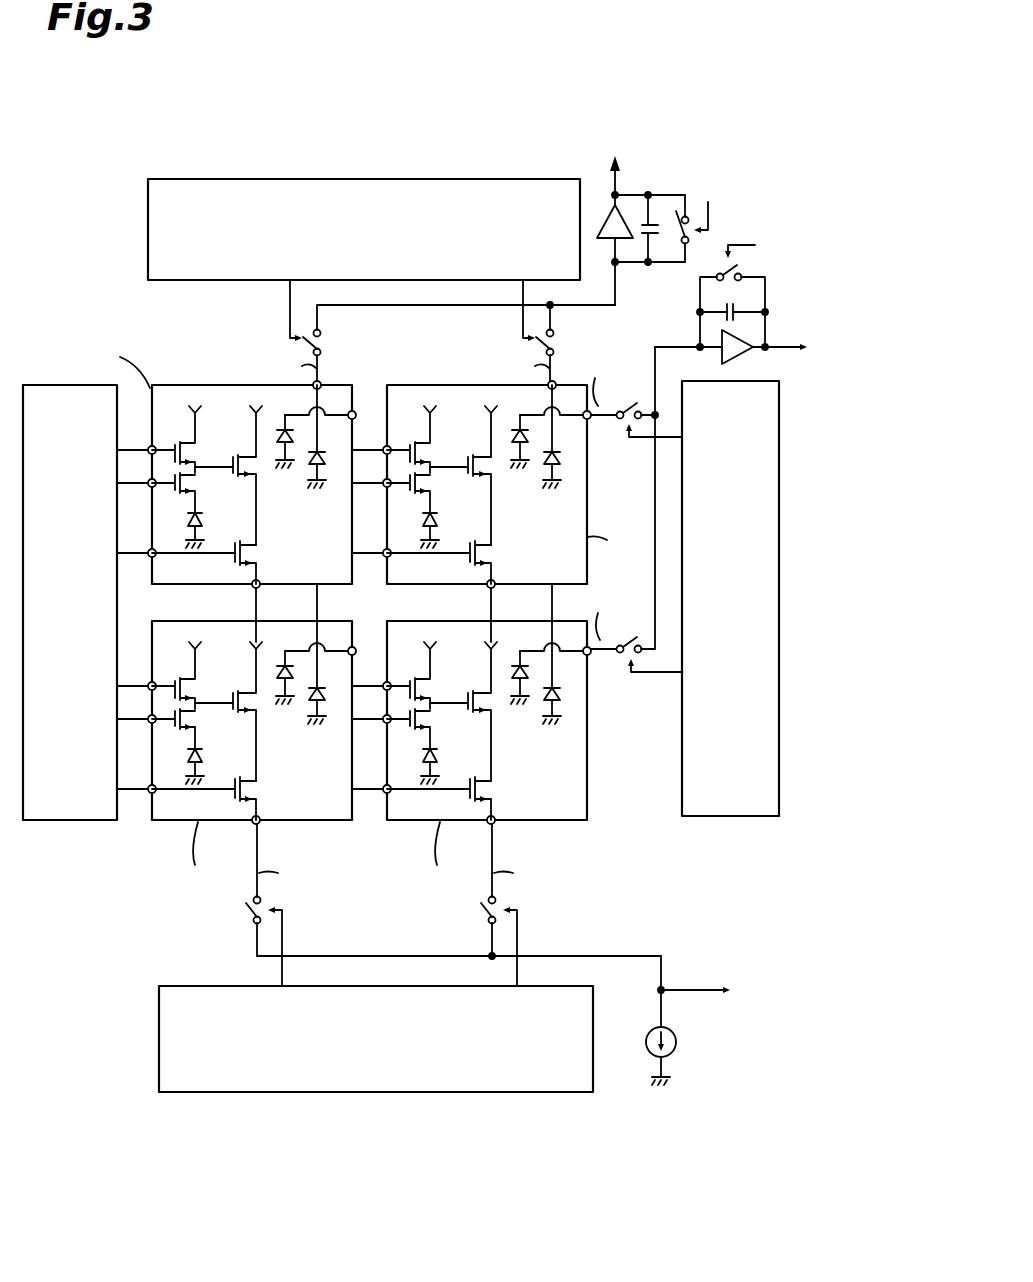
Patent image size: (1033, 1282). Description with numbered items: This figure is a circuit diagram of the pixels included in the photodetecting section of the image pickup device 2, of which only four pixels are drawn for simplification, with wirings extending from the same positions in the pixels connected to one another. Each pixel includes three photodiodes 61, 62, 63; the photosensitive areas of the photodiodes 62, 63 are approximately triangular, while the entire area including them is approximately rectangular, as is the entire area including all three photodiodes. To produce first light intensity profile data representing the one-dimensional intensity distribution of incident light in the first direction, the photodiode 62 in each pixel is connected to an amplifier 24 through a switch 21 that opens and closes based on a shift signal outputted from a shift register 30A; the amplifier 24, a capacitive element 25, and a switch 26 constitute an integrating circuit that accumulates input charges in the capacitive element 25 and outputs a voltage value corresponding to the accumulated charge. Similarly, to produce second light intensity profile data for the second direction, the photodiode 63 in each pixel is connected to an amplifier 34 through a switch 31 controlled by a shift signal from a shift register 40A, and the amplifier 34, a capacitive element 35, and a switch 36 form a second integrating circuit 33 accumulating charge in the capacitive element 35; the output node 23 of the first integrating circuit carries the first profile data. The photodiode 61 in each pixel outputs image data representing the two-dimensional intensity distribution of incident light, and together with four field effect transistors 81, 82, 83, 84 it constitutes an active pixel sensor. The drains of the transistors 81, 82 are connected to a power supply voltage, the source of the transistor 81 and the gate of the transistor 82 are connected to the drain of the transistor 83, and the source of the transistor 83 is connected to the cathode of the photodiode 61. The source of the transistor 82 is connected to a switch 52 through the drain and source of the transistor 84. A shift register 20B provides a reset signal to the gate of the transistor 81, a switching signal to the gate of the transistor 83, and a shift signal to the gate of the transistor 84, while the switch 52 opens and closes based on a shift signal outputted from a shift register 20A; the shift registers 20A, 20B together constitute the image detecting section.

The image pickup device 2 is at (155, 113).
The shift register 20A is at (413, 1094).
The shift register 20B is at (78, 822).
The shift register 30A is at (477, 179).
The shift register 40A is at (781, 563).
The switch 21 is at (329, 341).
The node 23 is at (652, 185).
The amplifier 24 is at (607, 217).
The capacitive element 25 is at (664, 253).
The switch 26 is at (677, 210).
The switch 31 is at (629, 403).
The integration circuit 33 is at (749, 320).
The amplifier 34 is at (745, 354).
The capacitive element 35 is at (752, 300).
The switch 36 is at (722, 290).
The switch 52 is at (241, 912).
The photodiode 61 is at (297, 648).
The photodiode 62 is at (466, 573).
The photodiode 63 is at (395, 544).
The field effect transistor 81 is at (294, 552).
The field effect transistor 82 is at (346, 591).
The field effect transistor 83 is at (314, 612).
The field effect transistor 84 is at (347, 678).